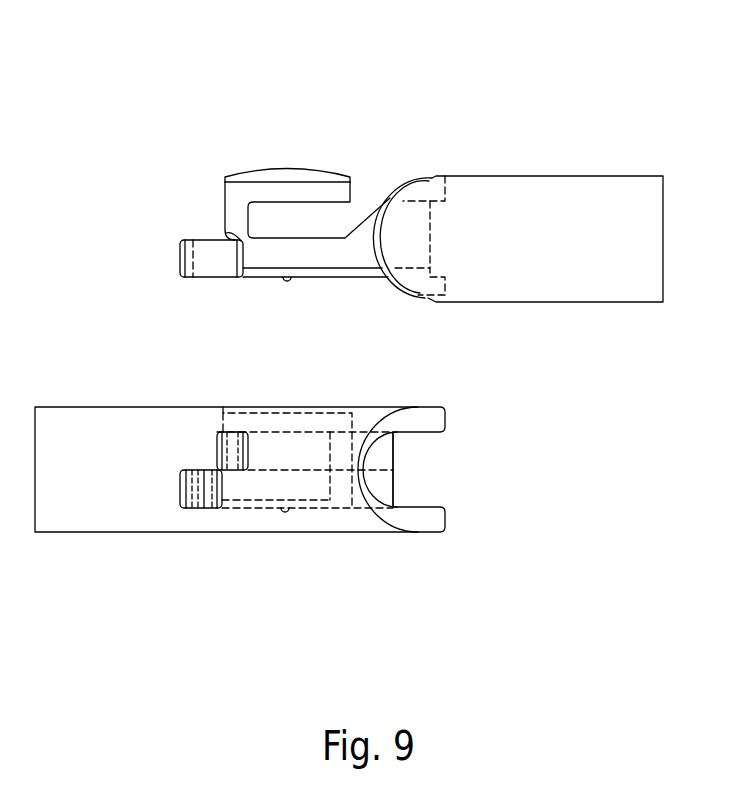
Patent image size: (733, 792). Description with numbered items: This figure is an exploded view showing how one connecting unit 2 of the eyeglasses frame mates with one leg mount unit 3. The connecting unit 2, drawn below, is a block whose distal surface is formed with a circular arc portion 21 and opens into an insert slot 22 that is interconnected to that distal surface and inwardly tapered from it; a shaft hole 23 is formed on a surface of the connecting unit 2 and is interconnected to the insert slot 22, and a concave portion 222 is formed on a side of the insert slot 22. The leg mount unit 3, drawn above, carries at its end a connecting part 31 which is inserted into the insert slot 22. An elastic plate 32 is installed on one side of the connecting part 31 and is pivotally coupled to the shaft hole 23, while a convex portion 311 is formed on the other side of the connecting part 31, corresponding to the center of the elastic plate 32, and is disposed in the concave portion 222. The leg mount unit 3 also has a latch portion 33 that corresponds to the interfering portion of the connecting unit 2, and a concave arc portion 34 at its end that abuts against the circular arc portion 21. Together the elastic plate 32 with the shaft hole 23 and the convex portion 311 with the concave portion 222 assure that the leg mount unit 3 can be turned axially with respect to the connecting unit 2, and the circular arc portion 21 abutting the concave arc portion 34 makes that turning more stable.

The connecting unit 2 is at (112, 552).
The circular arc portion 21 is at (447, 418).
The insert slot 22 is at (427, 470).
The shaft hole 23 is at (262, 408).
The concave portion 222 is at (284, 512).
The leg mount unit 3 is at (634, 150).
The connecting part 31 is at (348, 278).
The convex portion 311 is at (287, 283).
The elastic plate 32 is at (292, 165).
The latch portion 33 is at (180, 257).
The concave arc portion 34 is at (410, 178).